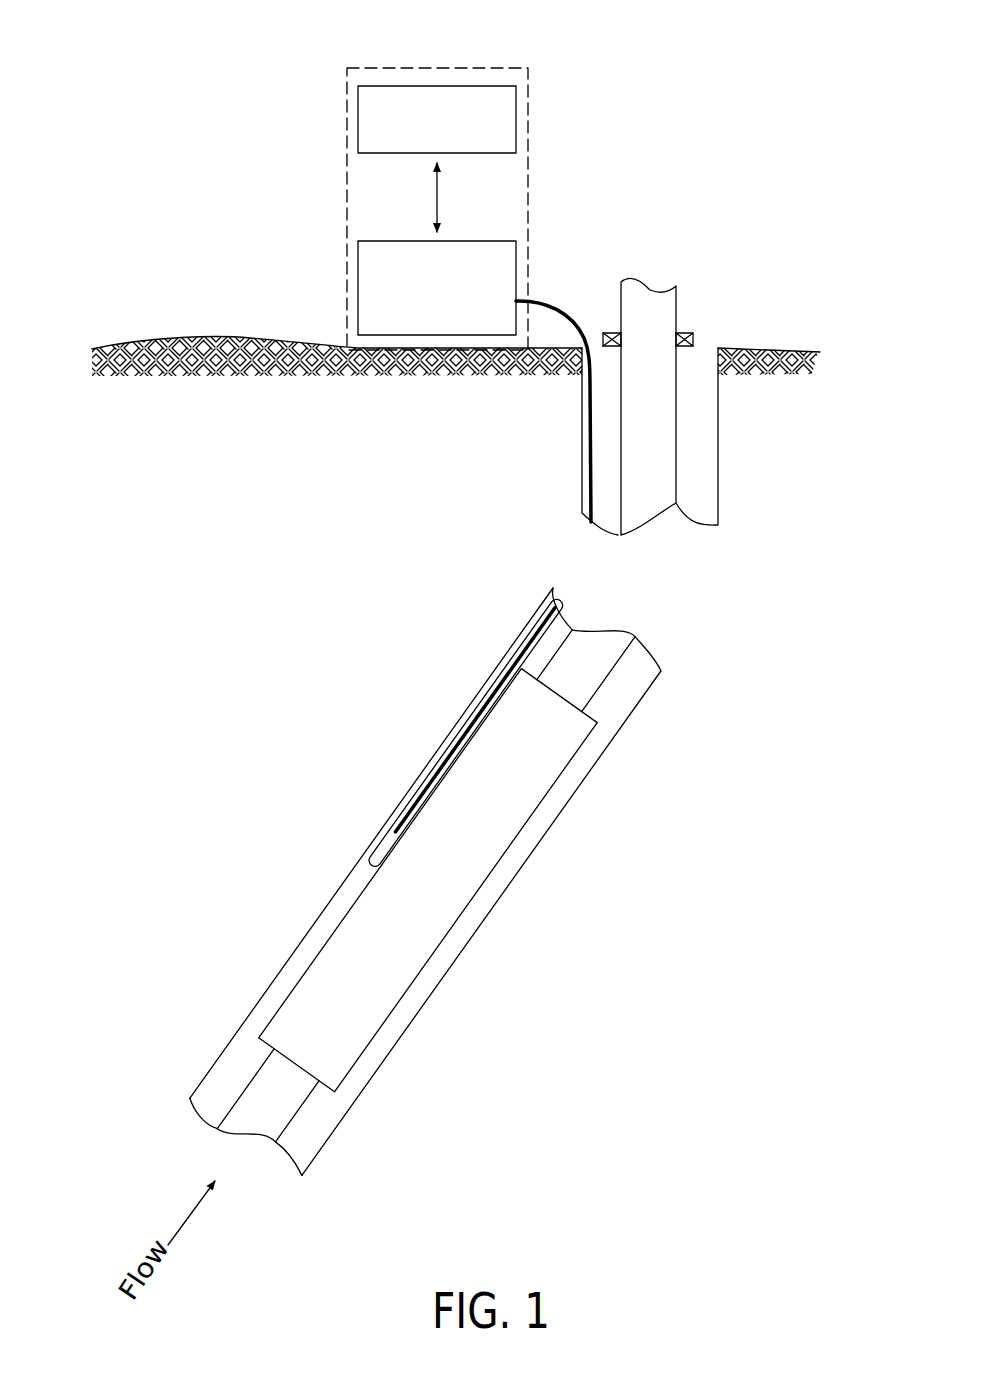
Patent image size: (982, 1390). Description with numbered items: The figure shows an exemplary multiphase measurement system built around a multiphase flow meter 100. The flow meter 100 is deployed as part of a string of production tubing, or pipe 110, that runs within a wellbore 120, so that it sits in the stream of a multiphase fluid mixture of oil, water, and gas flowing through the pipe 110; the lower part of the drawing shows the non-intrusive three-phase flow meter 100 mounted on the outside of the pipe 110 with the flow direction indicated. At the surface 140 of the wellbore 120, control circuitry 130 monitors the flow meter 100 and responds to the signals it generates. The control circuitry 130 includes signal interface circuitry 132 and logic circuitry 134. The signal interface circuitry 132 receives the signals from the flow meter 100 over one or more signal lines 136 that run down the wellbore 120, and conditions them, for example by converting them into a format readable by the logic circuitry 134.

The multiphase flow meter 100 is at (271, 985).
The production tubing 110 is at (676, 416).
The wellbore 120 is at (730, 474).
The control circuitry 130 is at (497, 68).
The signal interface circuitry 132 is at (358, 275).
The logic circuitry 134 is at (358, 115).
The signal lines 136 is at (568, 309).
The surface 140 is at (140, 346).